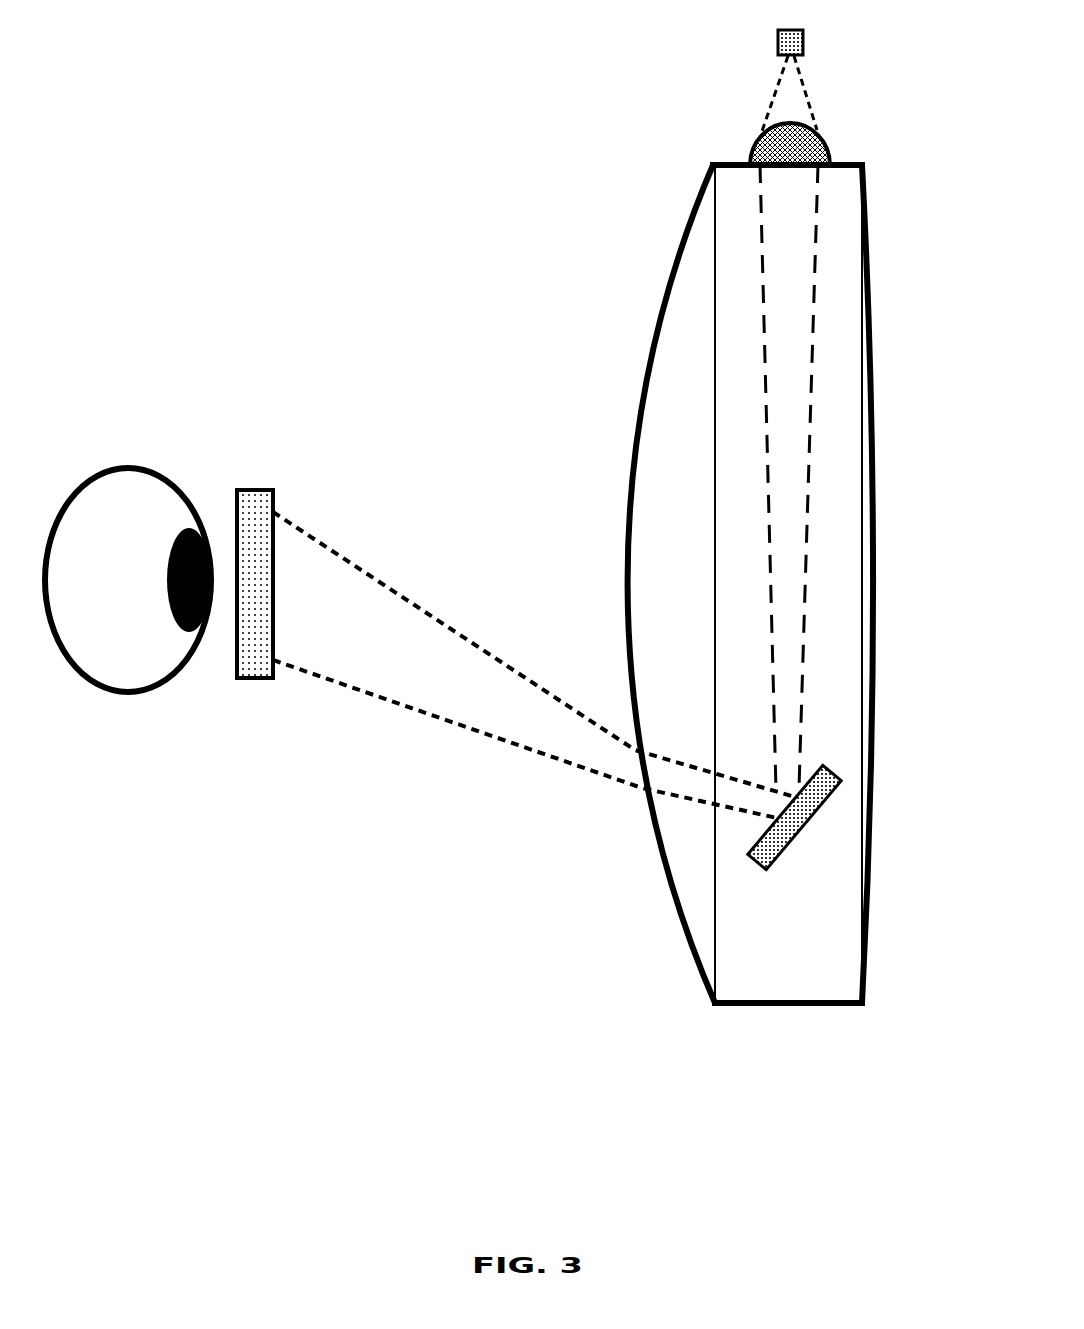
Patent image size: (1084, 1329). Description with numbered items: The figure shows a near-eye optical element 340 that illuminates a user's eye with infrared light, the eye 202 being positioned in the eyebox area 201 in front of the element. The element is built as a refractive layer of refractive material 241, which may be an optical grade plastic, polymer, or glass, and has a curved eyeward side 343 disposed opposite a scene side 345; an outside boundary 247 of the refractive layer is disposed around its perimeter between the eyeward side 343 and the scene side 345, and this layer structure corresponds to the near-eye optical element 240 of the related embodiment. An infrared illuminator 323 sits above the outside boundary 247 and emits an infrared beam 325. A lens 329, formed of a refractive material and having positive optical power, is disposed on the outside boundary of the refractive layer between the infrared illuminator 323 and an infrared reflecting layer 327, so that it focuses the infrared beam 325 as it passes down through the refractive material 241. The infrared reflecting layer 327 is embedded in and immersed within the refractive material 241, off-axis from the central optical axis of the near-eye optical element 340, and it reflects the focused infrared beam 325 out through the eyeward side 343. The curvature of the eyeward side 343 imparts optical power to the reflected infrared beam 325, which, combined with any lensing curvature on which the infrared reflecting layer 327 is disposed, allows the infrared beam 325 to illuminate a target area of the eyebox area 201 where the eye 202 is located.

The eyebox area 201 is at (257, 490).
The eye 202 is at (99, 458).
The near-eye optical element 240 is at (774, 581).
The refractive material 241 is at (688, 723).
The outside boundary 247 is at (730, 154).
The infrared illuminator 323 is at (805, 41).
The infrared beam 325 is at (773, 90).
The infrared reflecting layer 327 is at (783, 850).
The lens 329 is at (822, 140).
The near-eye optical element 340 is at (862, 165).
The eyeward side 343 is at (670, 251).
The scene side 345 is at (884, 384).